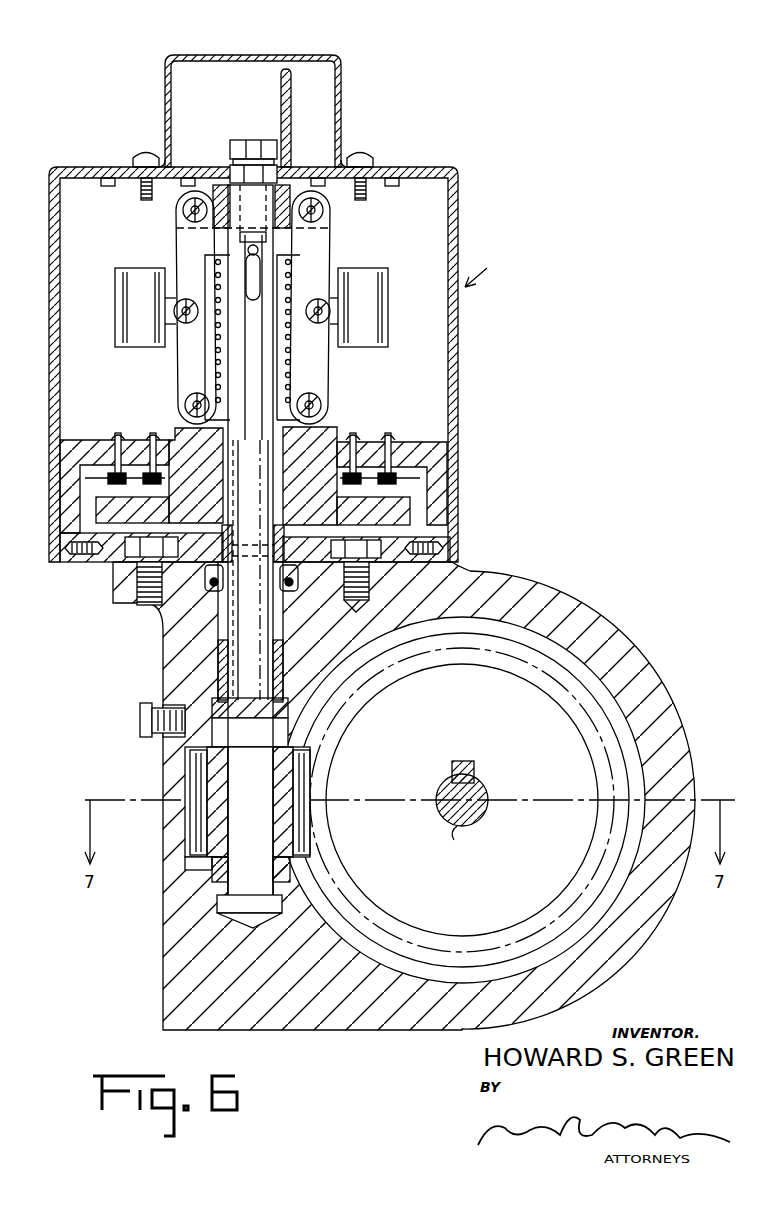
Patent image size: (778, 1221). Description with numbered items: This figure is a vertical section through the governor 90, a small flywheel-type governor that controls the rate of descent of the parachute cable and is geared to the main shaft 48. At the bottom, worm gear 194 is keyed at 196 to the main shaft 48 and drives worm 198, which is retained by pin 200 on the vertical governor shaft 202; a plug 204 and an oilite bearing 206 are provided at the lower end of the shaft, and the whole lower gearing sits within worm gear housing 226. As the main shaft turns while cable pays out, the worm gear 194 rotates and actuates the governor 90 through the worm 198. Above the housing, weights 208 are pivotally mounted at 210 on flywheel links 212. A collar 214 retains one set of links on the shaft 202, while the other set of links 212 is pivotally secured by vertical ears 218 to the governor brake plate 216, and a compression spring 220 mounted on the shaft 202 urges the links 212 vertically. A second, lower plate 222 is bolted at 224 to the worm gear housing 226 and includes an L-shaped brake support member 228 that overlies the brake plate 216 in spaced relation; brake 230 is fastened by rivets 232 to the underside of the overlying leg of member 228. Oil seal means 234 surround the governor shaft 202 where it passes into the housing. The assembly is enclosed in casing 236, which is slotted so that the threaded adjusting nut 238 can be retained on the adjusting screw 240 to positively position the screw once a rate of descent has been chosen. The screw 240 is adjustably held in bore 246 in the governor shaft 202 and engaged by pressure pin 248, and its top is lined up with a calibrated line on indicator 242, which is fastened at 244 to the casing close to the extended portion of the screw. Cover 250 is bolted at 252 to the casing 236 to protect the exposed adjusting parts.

The main shaft 48 is at (462, 813).
The governor 90 is at (486, 274).
The worm gear 194 is at (600, 713).
The key 196 is at (474, 771).
The worm 198 is at (200, 829).
The pin 200 is at (250, 716).
The governor shaft 202 is at (258, 460).
The plug 204 is at (140, 727).
The oilite bearing 206 is at (220, 882).
The weights 208 is at (130, 338).
The pivot 210 is at (322, 300).
The flywheel links 212 is at (190, 262).
The collar 214 is at (225, 215).
The governor brake plate 216 is at (118, 506).
The vertical ears 218 is at (183, 408).
The compression spring 220 is at (290, 288).
The lower plate 222 is at (108, 562).
The bolts 224 is at (152, 609).
The worm gear housing 226 is at (540, 597).
The L-shaped brake support member 228 is at (437, 497).
The brake 230 is at (400, 477).
The rivets 232 is at (391, 432).
The oil seal means 234 is at (285, 596).
The casing 236 is at (458, 215).
The threaded adjusting nut 238 is at (268, 180).
The adjusting screw 240 is at (253, 140).
The indicator 242 is at (291, 93).
The fastening 244 is at (330, 160).
The bore 246 is at (245, 238).
The pressure pin 248 is at (262, 272).
The cover 250 is at (207, 55).
The bolts 252 is at (147, 156).